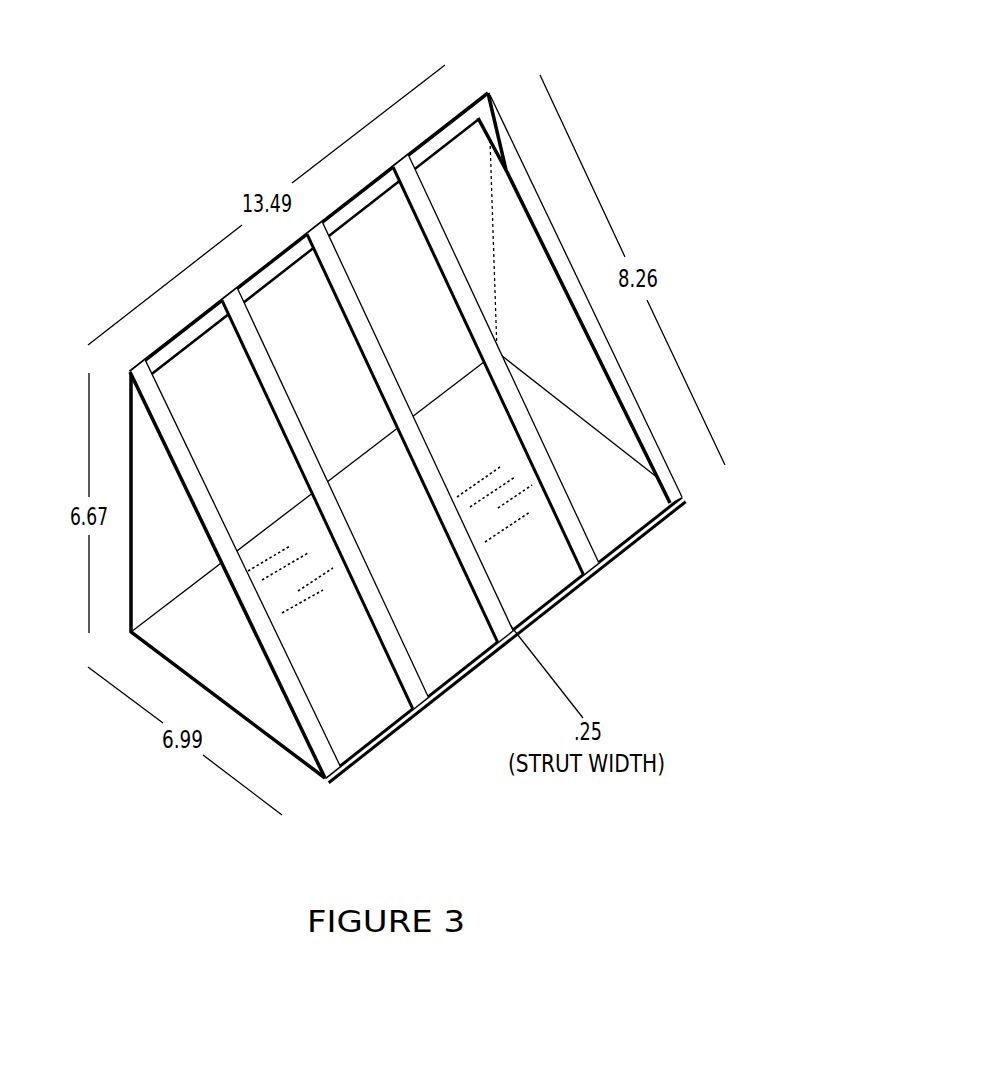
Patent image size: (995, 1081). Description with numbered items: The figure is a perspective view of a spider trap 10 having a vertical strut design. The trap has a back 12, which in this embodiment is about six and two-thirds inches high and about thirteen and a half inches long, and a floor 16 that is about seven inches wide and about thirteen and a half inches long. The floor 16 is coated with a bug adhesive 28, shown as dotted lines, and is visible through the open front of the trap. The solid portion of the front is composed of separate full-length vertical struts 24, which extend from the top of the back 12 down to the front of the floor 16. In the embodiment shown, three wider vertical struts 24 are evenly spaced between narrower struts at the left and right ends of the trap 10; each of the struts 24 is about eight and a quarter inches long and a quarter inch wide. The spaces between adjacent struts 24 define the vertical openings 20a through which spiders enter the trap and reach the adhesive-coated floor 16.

The spider trap 10 is at (658, 50).
The back 12 is at (137, 423).
The floor 16 is at (547, 573).
The vertical openings 20a is at (587, 392).
The vertical struts 24 is at (273, 653).
The bug adhesive 28 is at (293, 577).